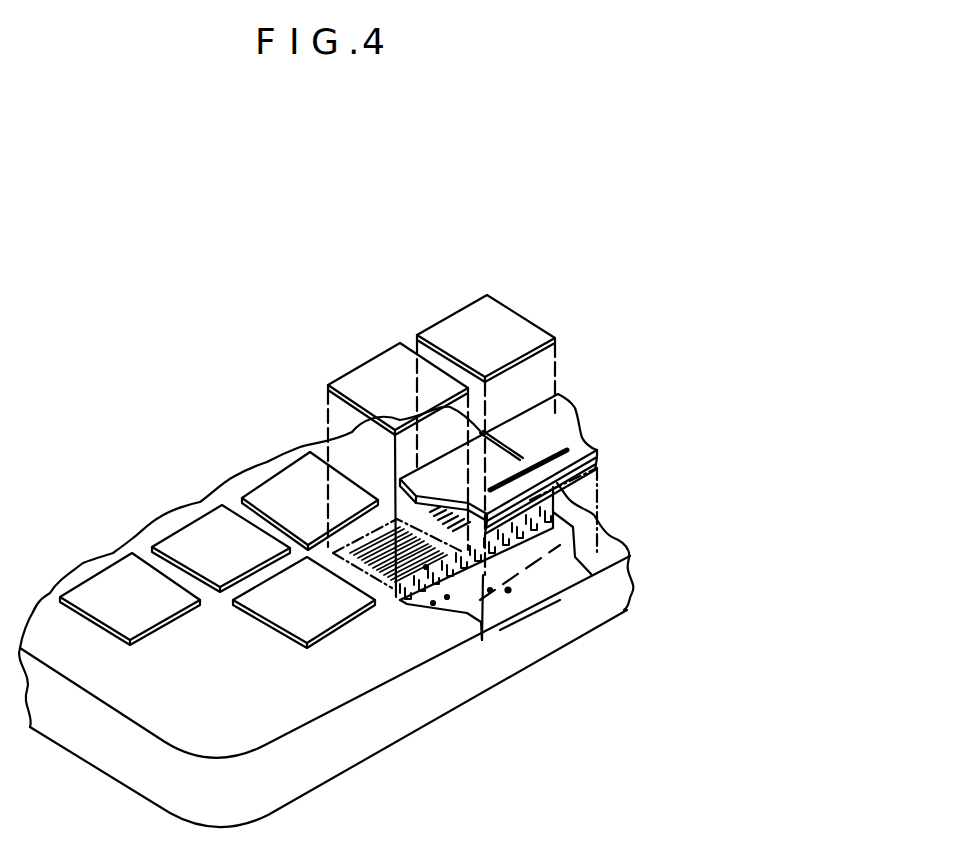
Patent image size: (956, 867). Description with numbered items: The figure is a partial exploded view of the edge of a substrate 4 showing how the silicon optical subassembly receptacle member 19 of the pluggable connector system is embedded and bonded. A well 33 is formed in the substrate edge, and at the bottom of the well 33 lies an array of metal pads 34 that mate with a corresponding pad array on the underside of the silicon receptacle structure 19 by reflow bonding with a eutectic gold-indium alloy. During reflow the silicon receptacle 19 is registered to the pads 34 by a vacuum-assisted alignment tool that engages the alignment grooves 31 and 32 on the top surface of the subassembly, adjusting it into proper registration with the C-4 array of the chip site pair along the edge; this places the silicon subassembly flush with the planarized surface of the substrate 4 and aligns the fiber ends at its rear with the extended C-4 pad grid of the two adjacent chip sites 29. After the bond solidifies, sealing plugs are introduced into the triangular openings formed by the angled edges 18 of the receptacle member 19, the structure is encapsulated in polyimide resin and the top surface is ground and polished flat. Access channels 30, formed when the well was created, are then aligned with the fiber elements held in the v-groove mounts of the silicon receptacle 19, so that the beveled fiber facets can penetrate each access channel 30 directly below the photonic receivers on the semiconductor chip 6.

The substrate 4 is at (637, 557).
The semiconductor chip 6 is at (528, 320).
The angled edges 18 is at (597, 456).
The silicon optical subassembly receptacle member 19 is at (575, 423).
The chip sites 29 is at (598, 471).
The access channels 30 is at (503, 553).
The alignment groove 31 is at (503, 447).
The alignment groove 32 is at (585, 448).
The well 33 is at (563, 597).
The metal pads 34 is at (508, 592).